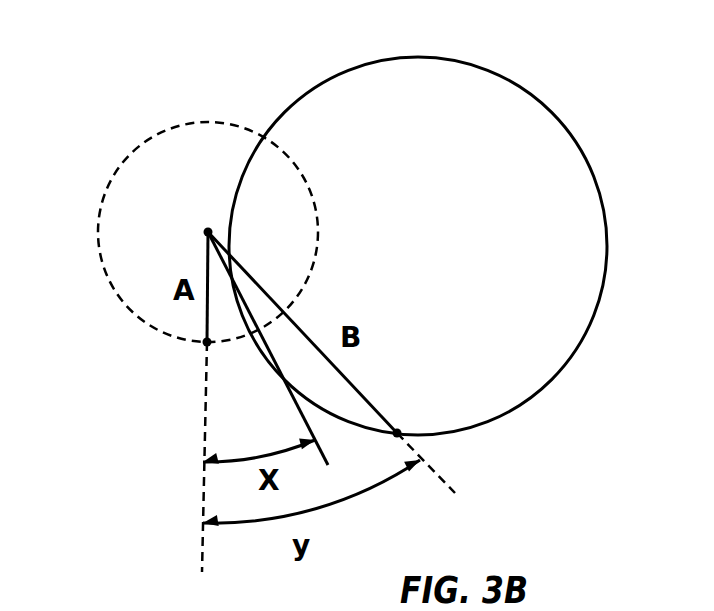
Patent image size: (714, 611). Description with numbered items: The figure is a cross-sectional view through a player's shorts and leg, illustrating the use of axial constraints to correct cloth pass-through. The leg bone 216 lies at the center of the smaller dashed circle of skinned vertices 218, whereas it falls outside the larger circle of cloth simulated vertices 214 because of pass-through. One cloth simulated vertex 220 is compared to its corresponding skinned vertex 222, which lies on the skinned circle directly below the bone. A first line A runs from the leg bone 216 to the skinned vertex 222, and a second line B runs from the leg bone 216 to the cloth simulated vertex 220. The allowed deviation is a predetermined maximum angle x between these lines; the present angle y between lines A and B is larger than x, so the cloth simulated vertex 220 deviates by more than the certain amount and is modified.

The cloth simulated vertices 214 is at (473, 63).
The leg bone 216 is at (207, 228).
The skinned vertices 218 is at (177, 123).
The cloth simulated vertex 220 is at (397, 432).
The skinned vertex 222 is at (207, 342).